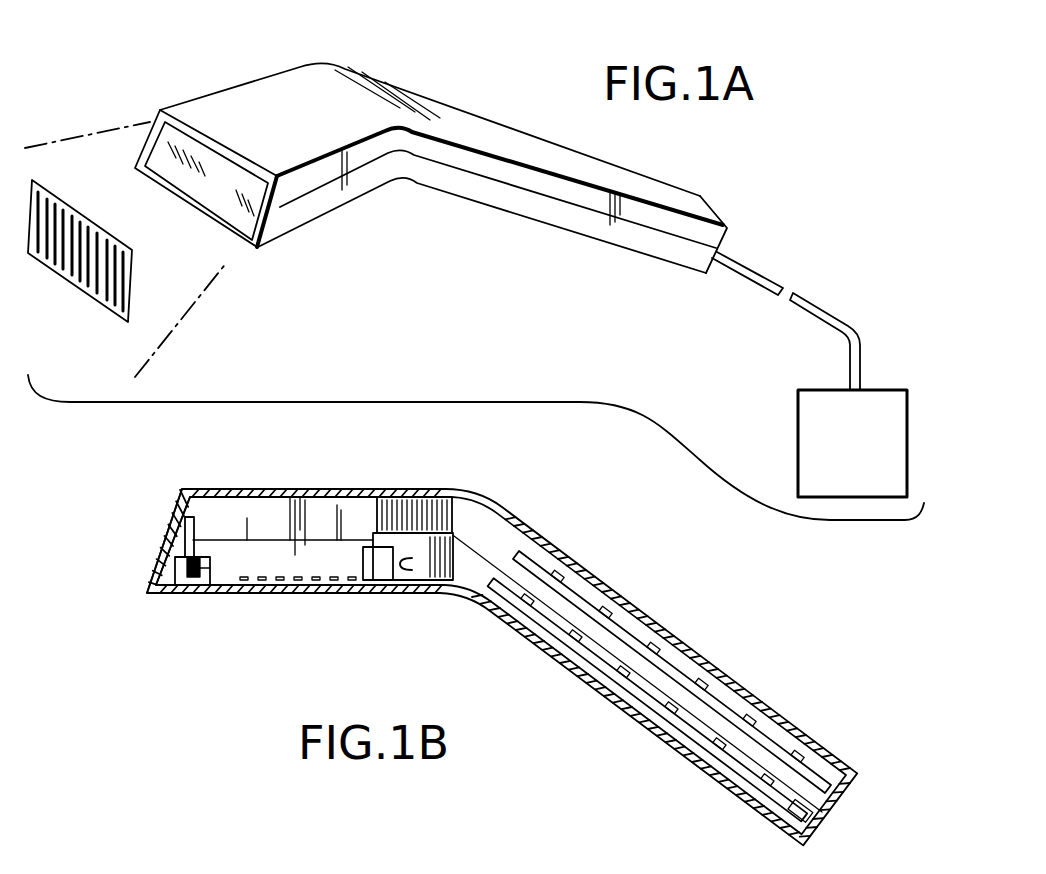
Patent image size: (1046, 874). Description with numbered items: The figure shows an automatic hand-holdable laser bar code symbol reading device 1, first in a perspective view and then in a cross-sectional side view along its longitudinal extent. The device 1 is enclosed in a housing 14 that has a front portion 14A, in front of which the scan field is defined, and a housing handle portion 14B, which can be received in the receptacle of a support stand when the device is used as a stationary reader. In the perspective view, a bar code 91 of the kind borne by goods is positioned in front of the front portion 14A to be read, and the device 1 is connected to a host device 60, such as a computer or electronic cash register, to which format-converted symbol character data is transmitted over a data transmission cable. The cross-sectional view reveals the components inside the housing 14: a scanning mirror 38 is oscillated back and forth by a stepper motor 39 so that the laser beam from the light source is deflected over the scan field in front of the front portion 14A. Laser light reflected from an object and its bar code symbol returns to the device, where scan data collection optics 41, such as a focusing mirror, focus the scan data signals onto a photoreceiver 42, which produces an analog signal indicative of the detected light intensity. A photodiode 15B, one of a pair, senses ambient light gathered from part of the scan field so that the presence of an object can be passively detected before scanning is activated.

In FIG. 1A, the automatic bar code symbol reading device 1 is at (477, 70).
In FIG. 1B, the automatic bar code symbol reading device 1 is at (690, 617).
In FIG. 1A, the housing 14 is at (477, 197).
In FIG. 1B, the housing 14 is at (503, 510).
In FIG. 1A, the front portion 14A is at (240, 190).
In FIG. 1B, the front portion 14A is at (173, 548).
In FIG. 1A, the housing handle portion 14B is at (637, 253).
In FIG. 1B, the housing handle portion 14B is at (650, 727).
In FIG. 1A, the bar code 91 is at (91, 296).
In FIG. 1A, the host device 60 is at (798, 450).
In FIG. 1B, the scanning mirror 38 is at (382, 521).
In FIG. 1B, the stepper motor 39 is at (427, 537).
In FIG. 1B, the scan data collection optics 41 is at (188, 530).
In FIG. 1B, the photoreceiver 42 is at (392, 600).
In FIG. 1B, the photodiode 15B is at (203, 566).